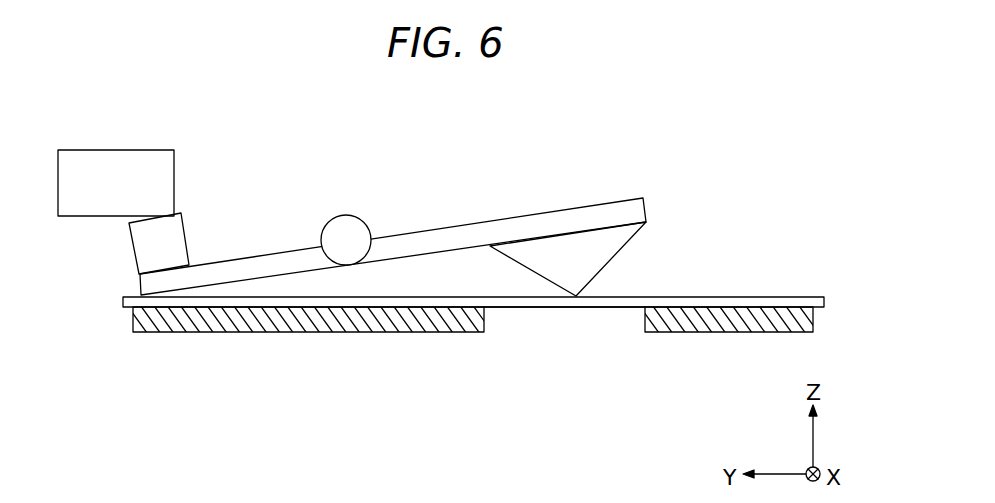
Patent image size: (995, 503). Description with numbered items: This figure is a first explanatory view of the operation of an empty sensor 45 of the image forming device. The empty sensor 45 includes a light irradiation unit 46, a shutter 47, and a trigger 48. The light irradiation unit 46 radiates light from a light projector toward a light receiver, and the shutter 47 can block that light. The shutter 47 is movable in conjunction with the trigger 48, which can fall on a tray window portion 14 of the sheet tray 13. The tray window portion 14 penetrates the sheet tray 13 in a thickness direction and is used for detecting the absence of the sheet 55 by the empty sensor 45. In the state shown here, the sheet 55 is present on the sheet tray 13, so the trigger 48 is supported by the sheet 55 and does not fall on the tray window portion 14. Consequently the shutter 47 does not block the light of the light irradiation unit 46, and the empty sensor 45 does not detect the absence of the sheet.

The sheet tray 13 is at (368, 328).
The tray window portion 14 is at (485, 319).
The empty sensor 45 is at (462, 209).
The light irradiation unit 46 is at (110, 167).
The shutter 47 is at (180, 247).
The trigger 48 is at (570, 252).
The sheet 55 is at (758, 298).